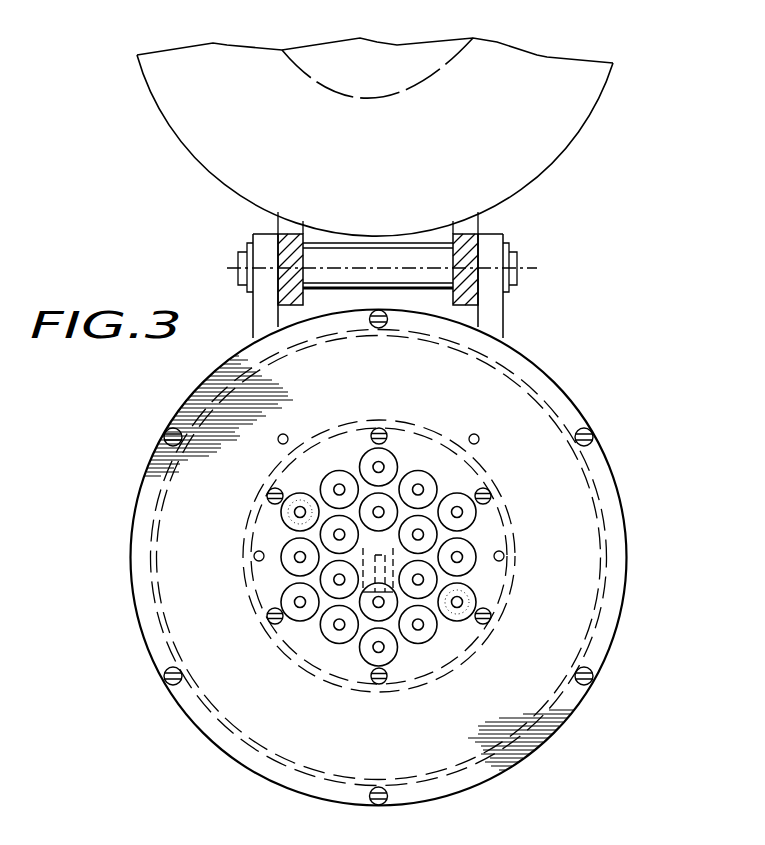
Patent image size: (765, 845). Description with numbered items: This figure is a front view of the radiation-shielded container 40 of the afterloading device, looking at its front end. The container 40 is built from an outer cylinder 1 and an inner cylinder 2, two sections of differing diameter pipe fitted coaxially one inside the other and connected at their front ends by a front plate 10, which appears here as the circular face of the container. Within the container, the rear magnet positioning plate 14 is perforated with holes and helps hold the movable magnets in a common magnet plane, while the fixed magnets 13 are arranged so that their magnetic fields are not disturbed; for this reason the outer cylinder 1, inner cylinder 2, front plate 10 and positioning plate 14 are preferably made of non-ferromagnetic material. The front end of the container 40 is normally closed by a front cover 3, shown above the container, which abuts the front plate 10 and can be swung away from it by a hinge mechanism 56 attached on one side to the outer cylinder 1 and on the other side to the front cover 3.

The outer cylinder 1 is at (589, 399).
The inner cylinder 2 is at (330, 673).
The front cover 3 is at (570, 100).
The front plate 10 is at (178, 577).
The fixed magnets 13 is at (423, 477).
The rear magnet positioning plate 14 is at (460, 556).
The radiation-shielded container 40 is at (632, 542).
The hinge mechanism 56 is at (493, 237).